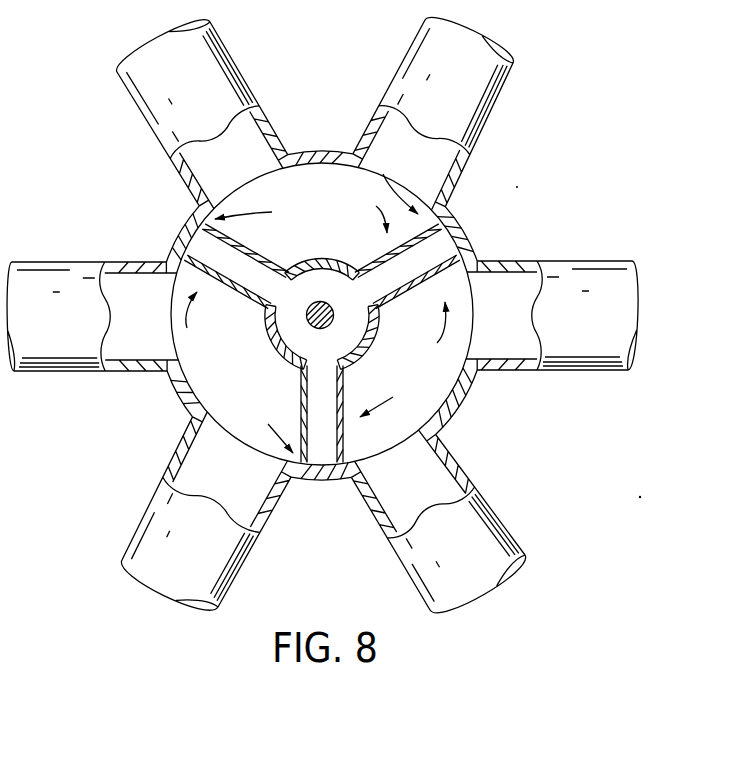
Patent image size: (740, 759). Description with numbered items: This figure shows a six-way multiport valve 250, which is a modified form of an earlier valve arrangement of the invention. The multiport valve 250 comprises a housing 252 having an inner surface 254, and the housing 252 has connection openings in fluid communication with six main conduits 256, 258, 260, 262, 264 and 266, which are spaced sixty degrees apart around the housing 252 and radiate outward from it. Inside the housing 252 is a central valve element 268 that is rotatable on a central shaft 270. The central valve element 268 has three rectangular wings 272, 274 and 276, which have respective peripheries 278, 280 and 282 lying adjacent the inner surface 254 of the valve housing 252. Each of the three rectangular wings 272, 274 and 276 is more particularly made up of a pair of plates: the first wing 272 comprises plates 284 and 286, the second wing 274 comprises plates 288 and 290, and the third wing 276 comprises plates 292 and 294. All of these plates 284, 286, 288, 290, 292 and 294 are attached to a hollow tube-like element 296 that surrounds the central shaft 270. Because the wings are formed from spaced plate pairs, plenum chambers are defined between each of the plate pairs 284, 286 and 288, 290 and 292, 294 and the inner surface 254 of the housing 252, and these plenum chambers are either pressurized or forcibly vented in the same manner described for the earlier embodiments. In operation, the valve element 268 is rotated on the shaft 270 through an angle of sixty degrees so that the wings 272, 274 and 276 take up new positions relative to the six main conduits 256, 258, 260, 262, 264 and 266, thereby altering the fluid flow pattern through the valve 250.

The six-way multiport valve 250 is at (322, 314).
The housing 252 is at (307, 151).
The inner surface 254 is at (297, 168).
The main conduit 256 is at (458, 182).
The main conduit 258 is at (512, 371).
The main conduit 260 is at (465, 461).
The main conduit 262 is at (188, 450).
The main conduit 264 is at (137, 265).
The main conduit 266 is at (179, 172).
The central valve element 268 is at (362, 211).
The central shaft 270 is at (333, 318).
The rectangular wing 272 is at (419, 329).
The rectangular wing 274 is at (396, 402).
The rectangular wing 276 is at (210, 313).
The periphery 278 is at (408, 185).
The periphery 280 is at (261, 430).
The periphery 282 is at (248, 204).
The plate 284 is at (400, 301).
The plate 286 is at (374, 250).
The plate 288 is at (345, 389).
The plate 290 is at (301, 397).
The plate 292 is at (238, 298).
The plate 294 is at (254, 249).
The hollow tube-like element 296 is at (340, 261).